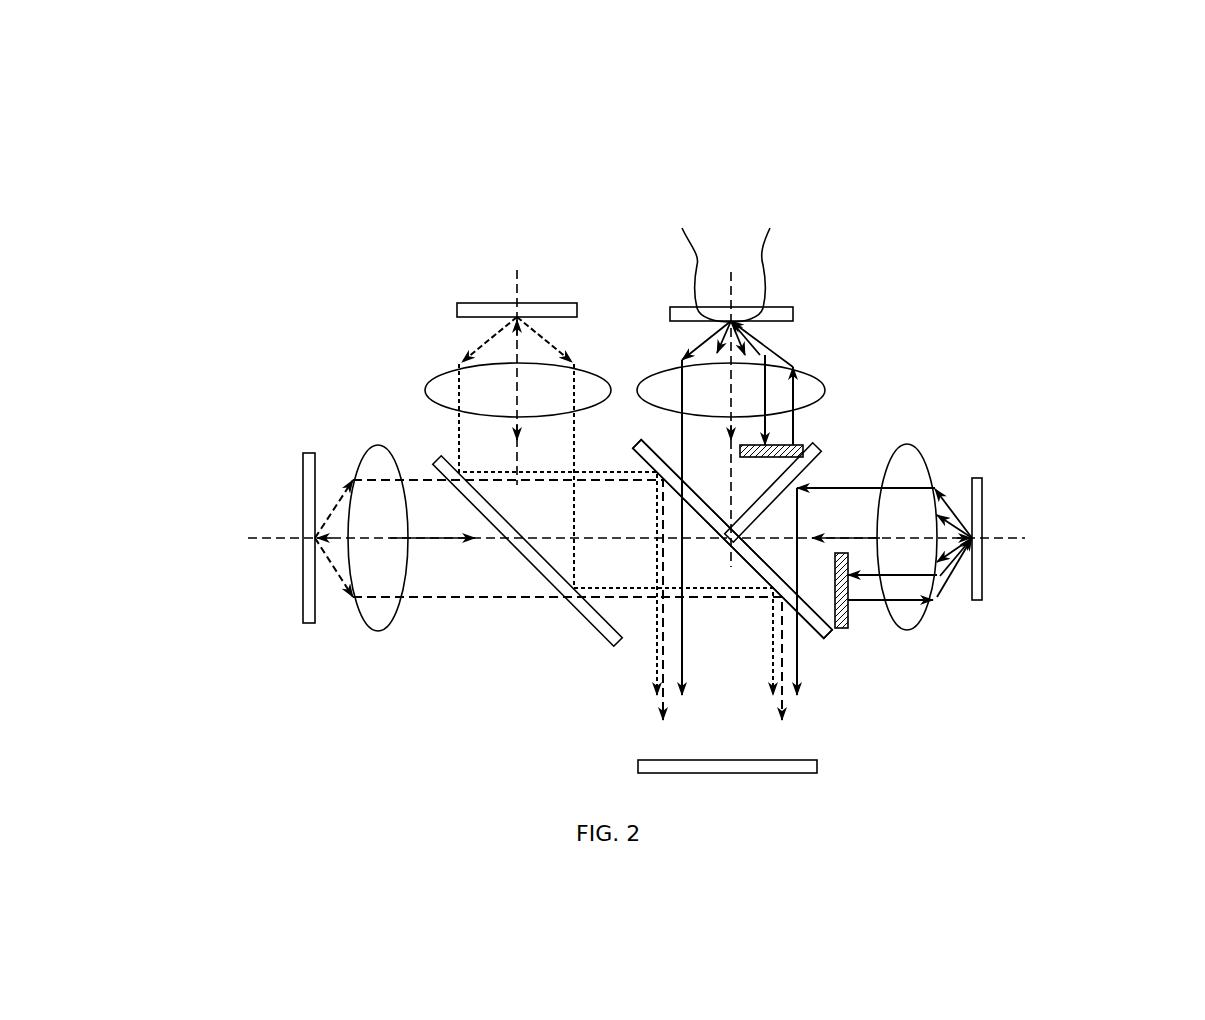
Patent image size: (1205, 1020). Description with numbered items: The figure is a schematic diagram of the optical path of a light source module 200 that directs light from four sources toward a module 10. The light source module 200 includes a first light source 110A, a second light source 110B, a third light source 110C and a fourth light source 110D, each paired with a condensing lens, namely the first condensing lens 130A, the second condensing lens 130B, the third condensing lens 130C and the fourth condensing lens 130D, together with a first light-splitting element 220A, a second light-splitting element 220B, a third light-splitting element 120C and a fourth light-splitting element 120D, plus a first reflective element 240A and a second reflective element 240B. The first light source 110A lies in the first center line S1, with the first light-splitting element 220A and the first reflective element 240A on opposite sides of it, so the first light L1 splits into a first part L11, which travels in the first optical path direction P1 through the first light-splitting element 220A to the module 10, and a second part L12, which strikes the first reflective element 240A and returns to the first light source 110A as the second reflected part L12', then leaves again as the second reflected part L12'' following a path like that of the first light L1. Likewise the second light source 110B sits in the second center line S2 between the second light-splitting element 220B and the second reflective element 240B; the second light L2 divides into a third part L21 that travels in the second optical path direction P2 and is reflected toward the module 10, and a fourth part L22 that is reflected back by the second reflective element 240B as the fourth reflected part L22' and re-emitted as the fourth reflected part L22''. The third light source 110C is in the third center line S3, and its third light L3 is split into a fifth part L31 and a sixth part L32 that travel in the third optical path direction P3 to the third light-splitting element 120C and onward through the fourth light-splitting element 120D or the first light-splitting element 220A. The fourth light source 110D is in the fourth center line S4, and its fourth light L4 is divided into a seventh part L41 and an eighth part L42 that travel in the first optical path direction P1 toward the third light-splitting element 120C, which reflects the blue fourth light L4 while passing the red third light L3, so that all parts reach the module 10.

The light source module 200 is at (358, 133).
The module 10 is at (817, 766).
The first light source 110A is at (793, 313).
The second light source 110B is at (985, 590).
The third light source 110C is at (308, 623).
The fourth light source 110D is at (457, 310).
The first condensing lens 130A is at (825, 382).
The second condensing lens 130B is at (907, 444).
The third condensing lens 130C is at (396, 612).
The fourth condensing lens 130D is at (428, 386).
The third light-splitting element 120C is at (590, 628).
The fourth light-splitting element 120D is at (830, 637).
The first light-splitting element 220A is at (638, 446).
The second light-splitting element 220B is at (810, 460).
The first reflective element 240A is at (803, 447).
The second reflective element 240B is at (848, 628).
The first light L1 is at (798, 203).
The first part L11 is at (698, 462).
The second part L12 is at (753, 323).
The second reflected part L12' is at (790, 383).
The second reflected part L12'' is at (777, 329).
The second light L2 is at (1073, 400).
The third part L21 is at (935, 488).
The fourth part L22 is at (959, 517).
The fourth reflected part L22' is at (954, 569).
The fourth reflected part L22'' is at (1032, 535).
The third light L3 is at (165, 480).
The fifth part L31 is at (330, 572).
The sixth part L32 is at (330, 505).
The fourth light L4 is at (585, 203).
The seventh part L41 is at (488, 340).
The eighth part L42 is at (546, 340).
The first center line S1 is at (732, 407).
The second center line S2 is at (901, 539).
The third center line S3 is at (471, 539).
The fourth center line S4 is at (517, 365).
The first optical path direction P1 is at (624, 432).
The second optical path direction P2 is at (846, 523).
The third optical path direction P3 is at (432, 523).